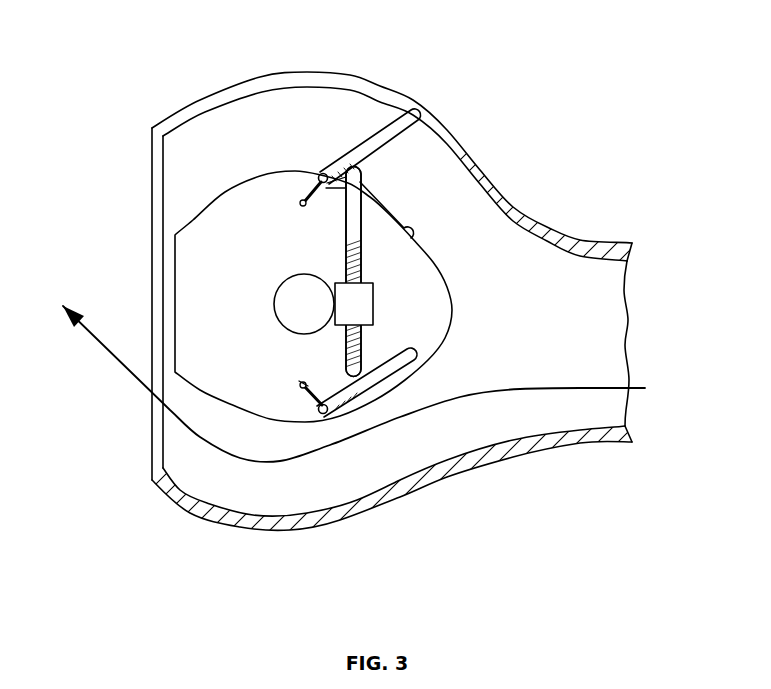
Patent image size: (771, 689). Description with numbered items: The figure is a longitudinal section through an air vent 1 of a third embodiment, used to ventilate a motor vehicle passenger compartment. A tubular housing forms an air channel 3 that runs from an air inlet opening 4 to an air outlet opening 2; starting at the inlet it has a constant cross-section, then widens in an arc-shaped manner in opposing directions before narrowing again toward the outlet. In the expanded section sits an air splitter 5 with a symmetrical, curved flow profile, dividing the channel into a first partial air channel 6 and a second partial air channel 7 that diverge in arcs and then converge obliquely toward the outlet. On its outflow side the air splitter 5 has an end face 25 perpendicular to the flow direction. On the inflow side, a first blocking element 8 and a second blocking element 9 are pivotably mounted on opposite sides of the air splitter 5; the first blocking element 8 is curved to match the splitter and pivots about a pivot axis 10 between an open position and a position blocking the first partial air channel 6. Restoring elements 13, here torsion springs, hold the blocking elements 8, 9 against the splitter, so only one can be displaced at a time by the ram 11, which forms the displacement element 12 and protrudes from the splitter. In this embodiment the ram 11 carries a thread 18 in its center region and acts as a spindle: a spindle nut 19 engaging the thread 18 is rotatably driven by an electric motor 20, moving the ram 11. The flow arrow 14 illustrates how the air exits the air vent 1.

The air vent 1 is at (528, 118).
The air outlet opening 2 is at (103, 223).
The air channel 3 is at (363, 513).
The air inlet opening 4 is at (636, 340).
The air splitter 5 is at (244, 400).
The first partial air channel 6 is at (281, 117).
The second partial air channel 7 is at (313, 487).
The first blocking element 8 is at (413, 113).
The second blocking element 9 is at (382, 378).
The pivot axis 10 is at (328, 175).
The ram 11 is at (355, 350).
The displacement element 12 is at (355, 350).
The restoring element 13 is at (305, 196).
The flow arrow 14 is at (110, 362).
The thread 18 is at (352, 257).
The spindle nut 19 is at (370, 305).
The electric motor 20 is at (276, 304).
The end face 25 is at (167, 307).